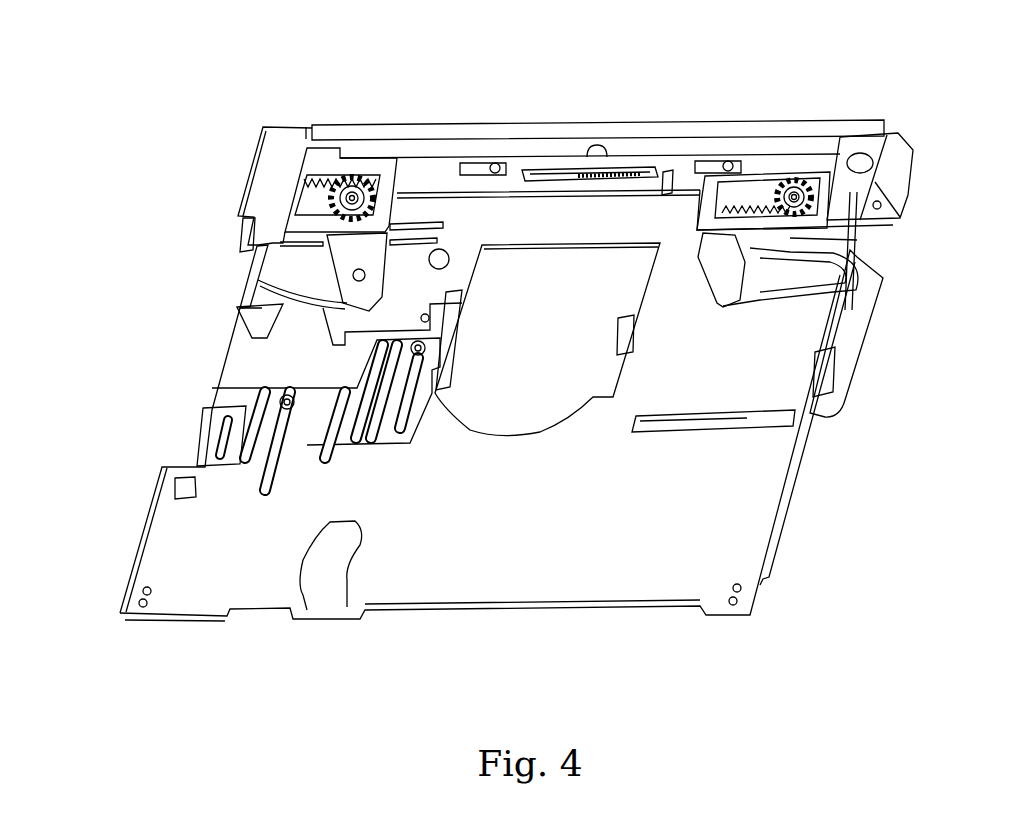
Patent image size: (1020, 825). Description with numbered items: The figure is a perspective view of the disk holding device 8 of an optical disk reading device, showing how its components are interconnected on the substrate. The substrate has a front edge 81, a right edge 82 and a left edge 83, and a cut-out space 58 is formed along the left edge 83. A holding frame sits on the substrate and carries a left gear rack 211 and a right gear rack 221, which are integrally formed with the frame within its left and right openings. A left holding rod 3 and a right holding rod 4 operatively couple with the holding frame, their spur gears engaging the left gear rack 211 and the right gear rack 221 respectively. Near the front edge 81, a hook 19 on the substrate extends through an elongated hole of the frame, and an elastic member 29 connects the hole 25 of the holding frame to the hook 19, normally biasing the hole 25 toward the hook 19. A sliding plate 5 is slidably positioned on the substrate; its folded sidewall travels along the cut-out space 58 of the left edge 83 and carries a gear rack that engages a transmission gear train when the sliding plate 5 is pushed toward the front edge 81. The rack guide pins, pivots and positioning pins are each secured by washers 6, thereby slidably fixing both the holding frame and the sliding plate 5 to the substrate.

The disk holding device 8 is at (104, 86).
The front edge 81 is at (604, 130).
The right edge 82 is at (847, 343).
The left edge 83 is at (252, 170).
The right holding rod 4 is at (840, 257).
The sliding plate 5 is at (232, 358).
The cut-out space 58 is at (247, 277).
The left holding rod 3 is at (373, 265).
The washers 6 is at (800, 193).
The hook 19 is at (607, 177).
The hole 25 is at (670, 190).
The elastic member 29 is at (643, 170).
The left gear rack 211 is at (347, 178).
The right gear rack 221 is at (745, 192).